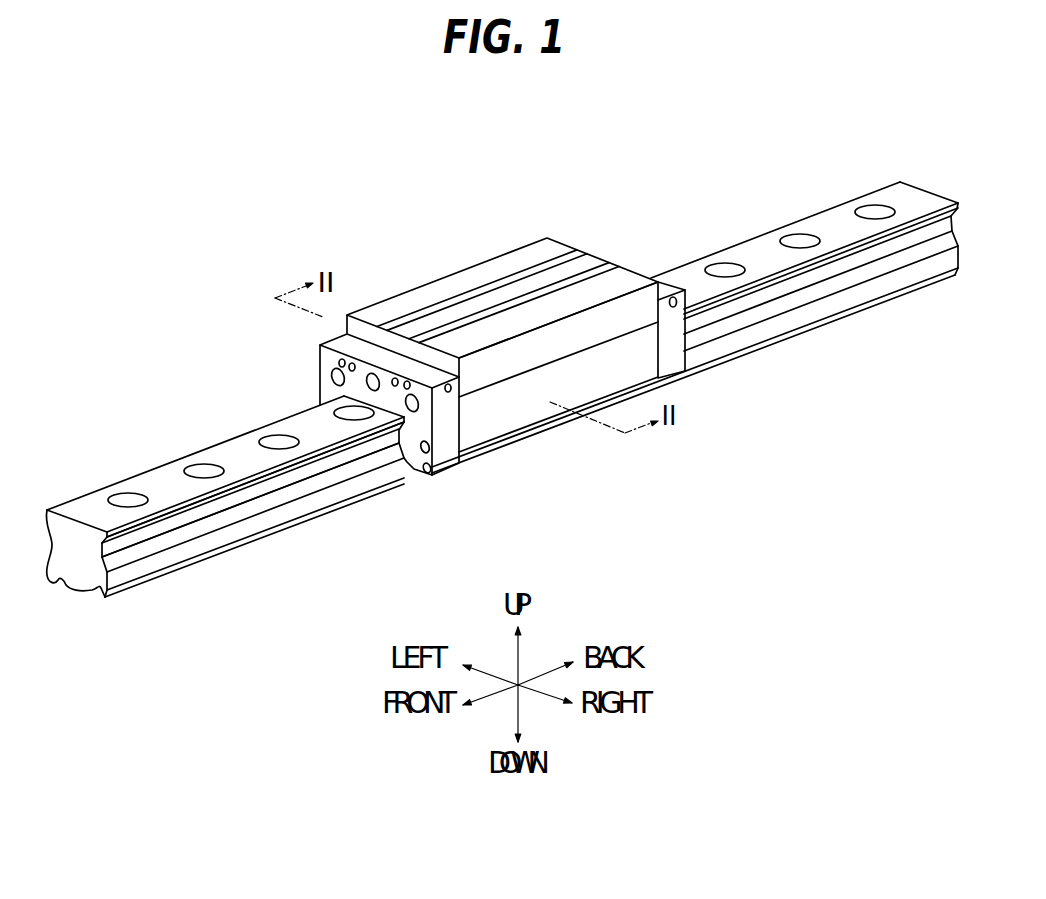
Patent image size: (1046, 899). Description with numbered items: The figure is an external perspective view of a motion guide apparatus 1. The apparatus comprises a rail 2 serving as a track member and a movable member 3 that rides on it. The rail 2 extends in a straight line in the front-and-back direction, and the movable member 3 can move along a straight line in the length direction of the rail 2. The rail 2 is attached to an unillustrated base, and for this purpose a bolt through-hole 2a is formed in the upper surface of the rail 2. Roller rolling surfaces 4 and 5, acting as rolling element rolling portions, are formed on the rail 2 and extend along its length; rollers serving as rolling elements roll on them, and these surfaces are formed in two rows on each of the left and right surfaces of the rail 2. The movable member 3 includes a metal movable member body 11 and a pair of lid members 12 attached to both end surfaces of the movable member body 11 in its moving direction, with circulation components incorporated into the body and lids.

The motion guide apparatus 1 is at (436, 121).
The rail 2 is at (268, 423).
The bolt through-hole 2a is at (212, 463).
The movable member 3 is at (523, 349).
The roller rolling surface 4 is at (285, 472).
The roller rolling surface 5 is at (252, 513).
The movable member body 11 is at (528, 410).
The lid member 12 is at (448, 456).